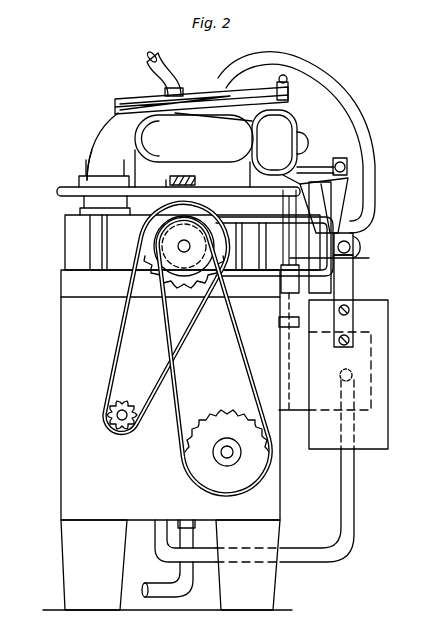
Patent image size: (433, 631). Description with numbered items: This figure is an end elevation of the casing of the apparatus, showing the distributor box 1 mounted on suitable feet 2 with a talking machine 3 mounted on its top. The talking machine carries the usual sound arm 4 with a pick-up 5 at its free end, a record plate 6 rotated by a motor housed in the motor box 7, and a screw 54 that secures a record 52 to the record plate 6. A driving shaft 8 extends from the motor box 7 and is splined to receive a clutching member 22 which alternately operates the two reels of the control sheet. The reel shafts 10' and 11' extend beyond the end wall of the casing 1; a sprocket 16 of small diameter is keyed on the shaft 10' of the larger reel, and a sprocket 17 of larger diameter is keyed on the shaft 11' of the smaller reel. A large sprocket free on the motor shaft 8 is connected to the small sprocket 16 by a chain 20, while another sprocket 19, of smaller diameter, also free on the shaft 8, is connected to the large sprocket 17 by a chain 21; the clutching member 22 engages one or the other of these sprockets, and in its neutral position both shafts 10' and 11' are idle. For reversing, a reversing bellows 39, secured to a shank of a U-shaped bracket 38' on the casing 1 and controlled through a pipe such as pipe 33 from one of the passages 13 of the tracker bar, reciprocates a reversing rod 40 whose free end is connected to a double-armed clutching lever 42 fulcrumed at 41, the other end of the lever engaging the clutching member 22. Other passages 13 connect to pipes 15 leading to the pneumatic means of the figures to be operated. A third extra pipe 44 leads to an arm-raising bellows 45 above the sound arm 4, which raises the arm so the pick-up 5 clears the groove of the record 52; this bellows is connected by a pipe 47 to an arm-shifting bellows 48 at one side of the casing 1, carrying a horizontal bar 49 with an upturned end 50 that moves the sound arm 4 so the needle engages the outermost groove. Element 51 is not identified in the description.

The distributor box 1 is at (61, 478).
The feet 2 is at (70, 582).
The talking machine 3 is at (62, 300).
The sound arm 4 is at (112, 132).
The pick-up 5 is at (296, 131).
The record plate 6 is at (69, 198).
The motor box 7 is at (105, 243).
The driving shaft 8 is at (160, 282).
The shaft of larger reel 10' is at (119, 436).
The shaft of smaller reel 11' is at (191, 472).
The passages 13 is at (250, 285).
The pipes 15 is at (183, 586).
The small sprocket 16 is at (110, 409).
The large sprocket 17 is at (258, 471).
The sprocket 19 is at (190, 250).
The chain 20 is at (121, 352).
The chain 21 is at (237, 345).
The clutching member 22 is at (157, 251).
The pipe 33 is at (344, 556).
The U-shaped bracket 38' is at (361, 352).
The reversing bellows 39 is at (366, 312).
The reversing rod 40 is at (356, 249).
The fulcrum 41 is at (303, 246).
The clutching lever 42 is at (283, 237).
The extra pipe 44 is at (165, 56).
The arm-raising bellows 45 is at (191, 96).
The pipe 47 is at (371, 153).
The arm-shifting bellows 48 is at (352, 204).
The horizontal bar 49 is at (323, 160).
The upturned end 50 is at (189, 175).
The bolt 51 is at (350, 186).
The record 52 is at (87, 172).
The screw 54 is at (170, 180).